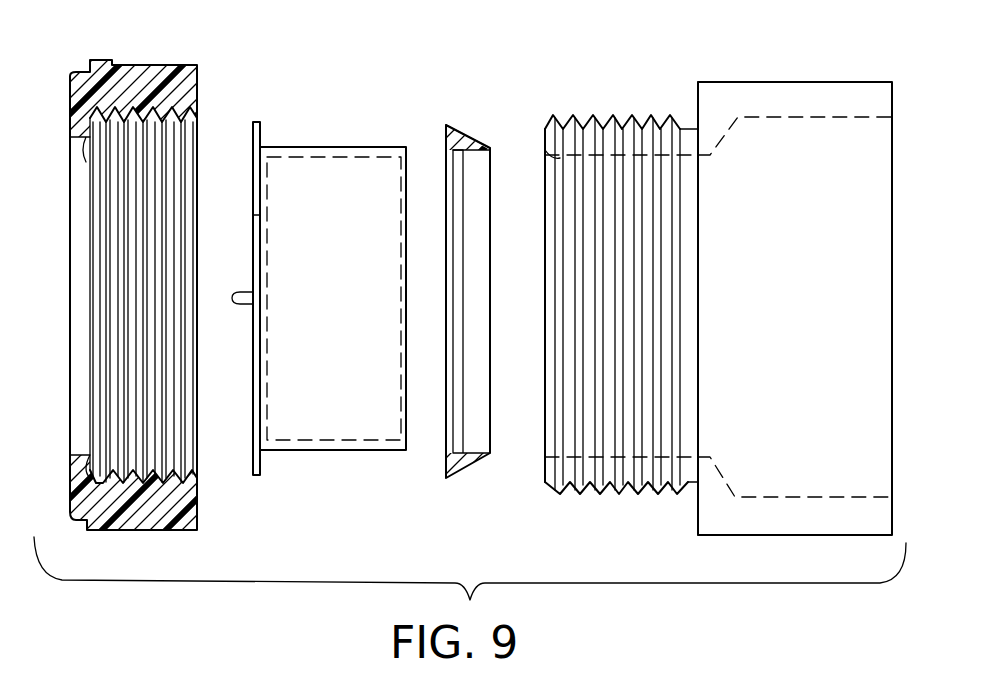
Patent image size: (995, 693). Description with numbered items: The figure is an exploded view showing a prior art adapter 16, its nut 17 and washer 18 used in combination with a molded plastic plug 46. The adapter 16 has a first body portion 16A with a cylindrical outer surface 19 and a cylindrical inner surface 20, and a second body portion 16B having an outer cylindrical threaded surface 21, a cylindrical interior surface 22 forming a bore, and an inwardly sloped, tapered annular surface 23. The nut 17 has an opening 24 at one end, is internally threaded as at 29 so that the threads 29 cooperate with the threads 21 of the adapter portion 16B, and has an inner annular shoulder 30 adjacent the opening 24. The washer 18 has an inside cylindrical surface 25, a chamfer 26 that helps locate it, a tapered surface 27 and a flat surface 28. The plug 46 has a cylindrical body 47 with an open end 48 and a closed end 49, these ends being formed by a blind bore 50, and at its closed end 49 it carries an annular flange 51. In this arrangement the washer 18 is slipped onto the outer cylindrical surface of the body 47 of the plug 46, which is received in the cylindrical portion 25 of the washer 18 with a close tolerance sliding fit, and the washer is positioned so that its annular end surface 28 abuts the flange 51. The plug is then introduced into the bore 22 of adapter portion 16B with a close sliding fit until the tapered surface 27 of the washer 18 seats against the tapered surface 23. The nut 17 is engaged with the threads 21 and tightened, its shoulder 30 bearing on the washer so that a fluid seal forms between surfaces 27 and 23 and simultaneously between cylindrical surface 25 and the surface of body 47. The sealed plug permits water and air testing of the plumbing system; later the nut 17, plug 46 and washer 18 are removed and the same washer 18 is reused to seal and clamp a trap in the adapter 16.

The adapter 16 is at (697, 312).
The first body portion 16A is at (820, 82).
The second body portion 16B is at (613, 115).
The nut 17 is at (136, 66).
The washer 18 is at (450, 476).
The cylindrical outer surface 19 is at (722, 82).
The cylindrical inner surface 20 is at (787, 497).
The outer cylindrical threaded surface 21 is at (560, 118).
The cylindrical interior surface 22 is at (668, 447).
The tapered annular surface 23 is at (552, 462).
The opening 24 is at (86, 140).
The inside cylindrical surface 25 is at (478, 156).
The chamfer 26 is at (462, 154).
The tapered surface 27 is at (462, 142).
The flat surface 28 is at (447, 134).
The internal threads 29 is at (174, 112).
The inner annular shoulder 30 is at (96, 455).
The plug 46 is at (243, 210).
The cylindrical body 47 is at (323, 147).
The open end 48 is at (406, 298).
The closed end 49 is at (256, 398).
The blind bore 50 is at (326, 440).
The annular flange 51 is at (262, 136).